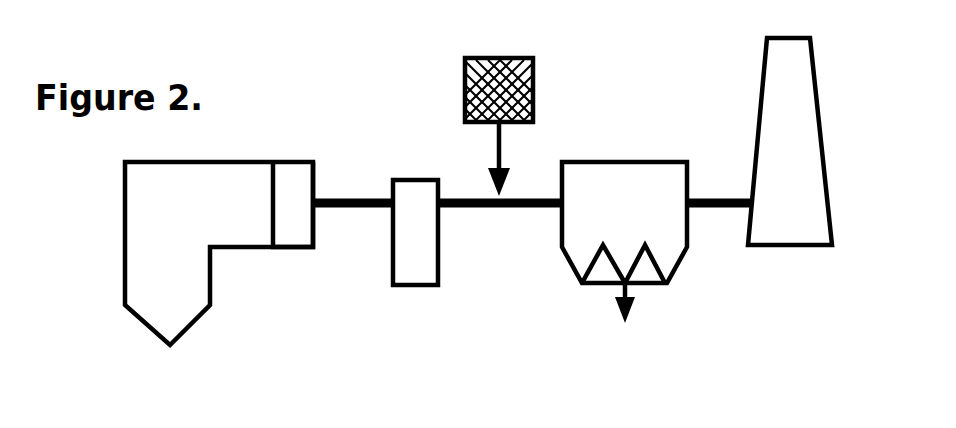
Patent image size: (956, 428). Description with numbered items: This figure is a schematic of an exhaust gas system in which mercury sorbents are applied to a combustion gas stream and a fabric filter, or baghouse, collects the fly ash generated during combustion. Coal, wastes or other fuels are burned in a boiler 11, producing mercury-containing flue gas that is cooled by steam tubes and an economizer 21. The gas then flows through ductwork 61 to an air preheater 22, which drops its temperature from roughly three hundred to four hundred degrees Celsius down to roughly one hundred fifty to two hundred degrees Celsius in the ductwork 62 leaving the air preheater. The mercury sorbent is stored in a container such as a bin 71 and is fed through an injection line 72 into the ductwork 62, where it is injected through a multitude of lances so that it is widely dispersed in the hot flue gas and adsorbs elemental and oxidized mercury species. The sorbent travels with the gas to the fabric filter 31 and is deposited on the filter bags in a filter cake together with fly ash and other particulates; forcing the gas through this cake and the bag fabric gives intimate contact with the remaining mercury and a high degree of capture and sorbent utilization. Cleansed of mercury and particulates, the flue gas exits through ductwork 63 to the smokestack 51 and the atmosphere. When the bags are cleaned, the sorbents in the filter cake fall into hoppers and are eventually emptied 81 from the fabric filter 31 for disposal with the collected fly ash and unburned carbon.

The boiler 11 is at (148, 305).
The economizer 21 is at (290, 227).
The air preheater 22 is at (412, 263).
The fabric filter 31 is at (645, 188).
The smokestack 51 is at (767, 228).
The ductwork 61 is at (345, 210).
The ductwork 62 is at (467, 210).
The ductwork 63 is at (704, 210).
The bin 71 is at (474, 64).
The injection line 72 is at (497, 154).
The emptied sorbents 81 is at (623, 321).